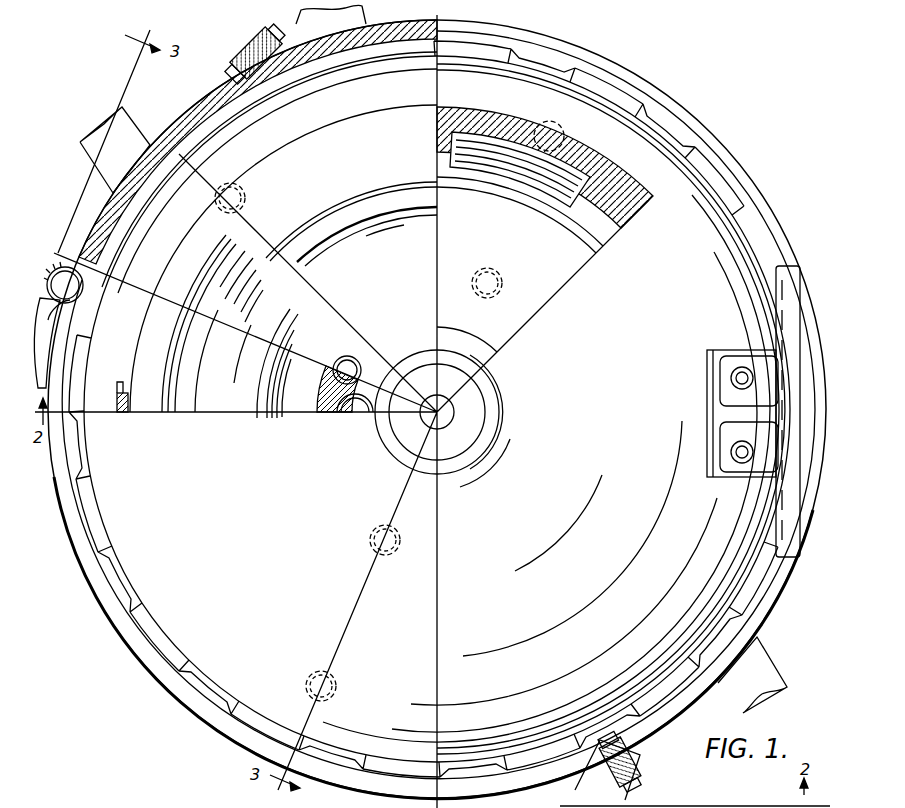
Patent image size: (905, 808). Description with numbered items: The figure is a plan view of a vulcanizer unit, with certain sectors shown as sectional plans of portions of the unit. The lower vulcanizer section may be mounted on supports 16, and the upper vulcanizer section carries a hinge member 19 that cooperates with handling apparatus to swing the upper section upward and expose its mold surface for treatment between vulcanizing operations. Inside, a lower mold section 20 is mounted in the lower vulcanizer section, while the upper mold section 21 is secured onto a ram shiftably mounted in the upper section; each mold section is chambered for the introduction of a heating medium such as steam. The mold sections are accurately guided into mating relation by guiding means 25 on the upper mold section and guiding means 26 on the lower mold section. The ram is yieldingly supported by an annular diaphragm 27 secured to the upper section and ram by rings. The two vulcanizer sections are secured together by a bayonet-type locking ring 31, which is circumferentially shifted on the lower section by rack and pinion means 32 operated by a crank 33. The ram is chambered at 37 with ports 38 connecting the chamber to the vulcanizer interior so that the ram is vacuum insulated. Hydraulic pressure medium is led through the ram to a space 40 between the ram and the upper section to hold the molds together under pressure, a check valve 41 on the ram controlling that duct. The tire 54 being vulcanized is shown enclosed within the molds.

The supports 16 is at (122, 118).
The hinge member 19 is at (790, 370).
The lower mold section 20 is at (155, 412).
The mold section 21 is at (443, 418).
The guiding means 25 is at (125, 412).
The guiding means 26 is at (324, 408).
The annular diaphragm 27 is at (557, 190).
The locking ring 31 is at (202, 104).
The rack and pinion means 32 is at (52, 265).
The crank 33 is at (70, 312).
The chamber 37 is at (437, 414).
The ports 38 is at (429, 424).
The space 40 is at (554, 436).
The check valve 41 is at (352, 405).
The tire 54 is at (231, 405).